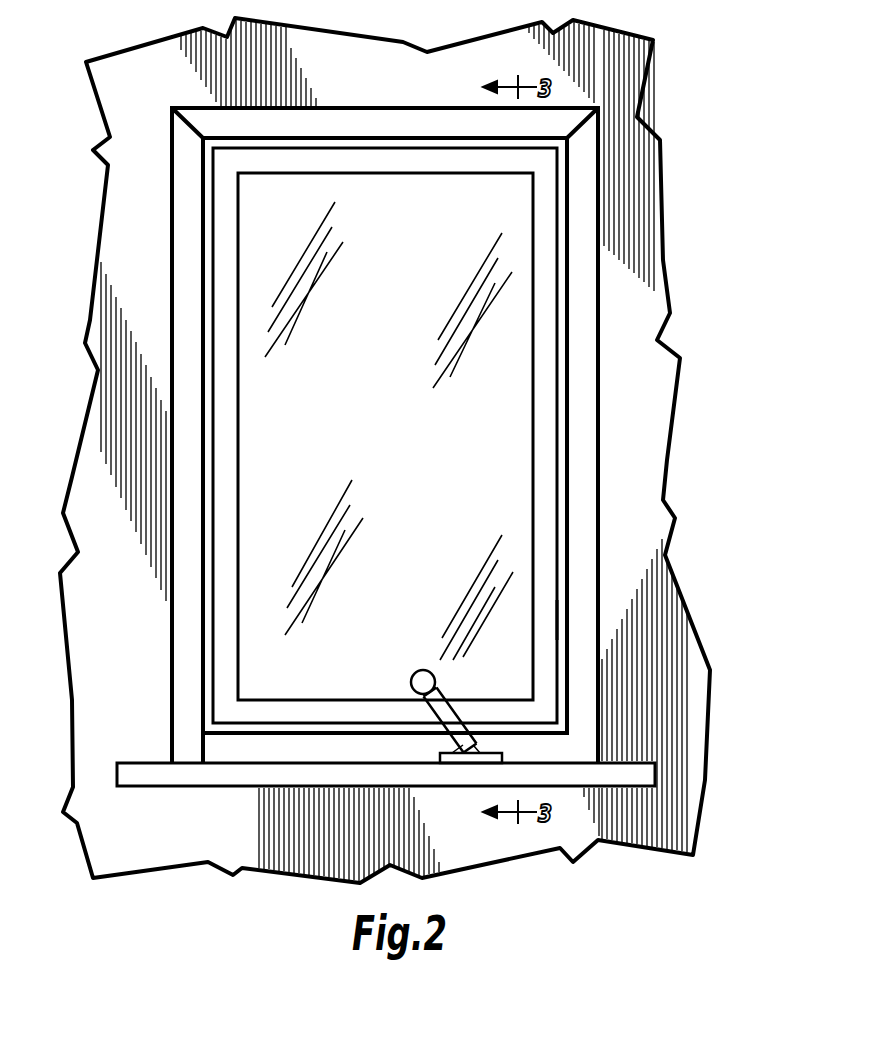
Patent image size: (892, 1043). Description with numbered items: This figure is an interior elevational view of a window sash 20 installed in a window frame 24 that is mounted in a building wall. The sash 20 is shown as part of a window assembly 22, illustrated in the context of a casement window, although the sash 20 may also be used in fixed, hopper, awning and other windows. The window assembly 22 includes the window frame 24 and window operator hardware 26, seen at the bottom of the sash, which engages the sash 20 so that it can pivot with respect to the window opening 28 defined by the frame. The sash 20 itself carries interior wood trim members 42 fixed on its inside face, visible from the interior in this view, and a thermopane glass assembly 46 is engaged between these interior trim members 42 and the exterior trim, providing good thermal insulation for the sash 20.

The sash 20 is at (562, 427).
The window assembly 22 is at (612, 322).
The window frame 24 is at (598, 518).
The window operator hardware 26 is at (463, 710).
The window opening 28 is at (565, 638).
The interior wood trim members 42 is at (238, 463).
The thermopane glass assembly 46 is at (392, 583).